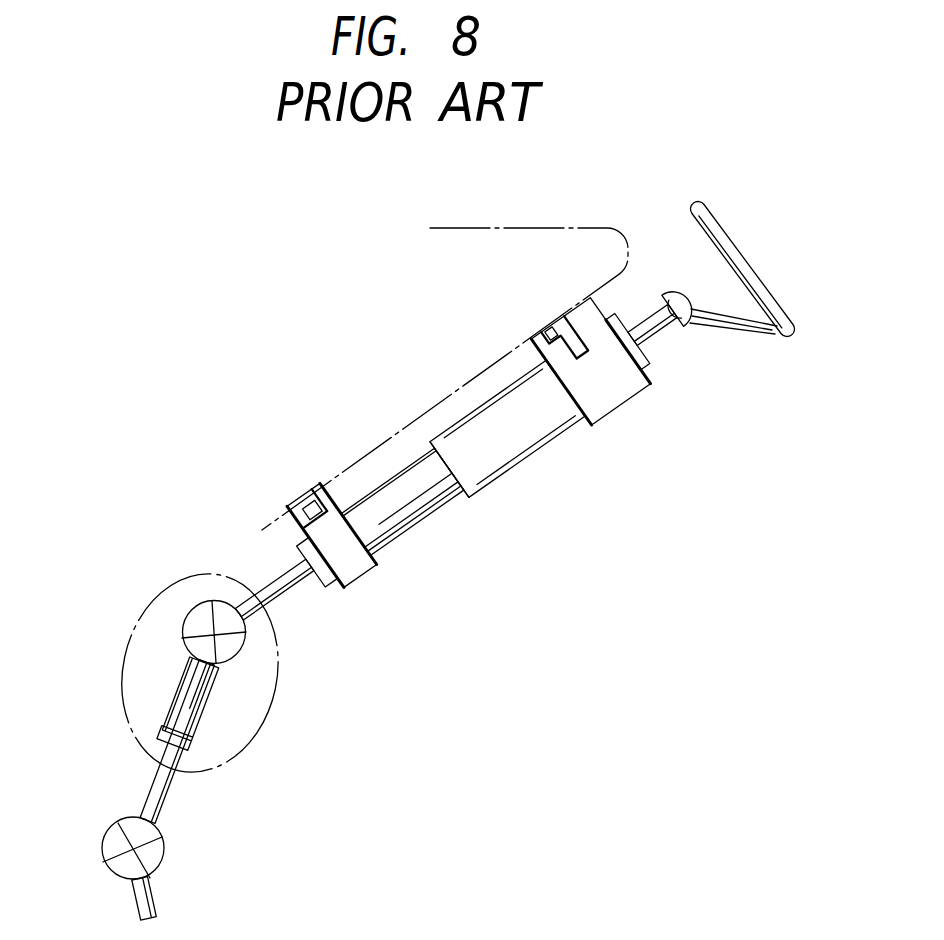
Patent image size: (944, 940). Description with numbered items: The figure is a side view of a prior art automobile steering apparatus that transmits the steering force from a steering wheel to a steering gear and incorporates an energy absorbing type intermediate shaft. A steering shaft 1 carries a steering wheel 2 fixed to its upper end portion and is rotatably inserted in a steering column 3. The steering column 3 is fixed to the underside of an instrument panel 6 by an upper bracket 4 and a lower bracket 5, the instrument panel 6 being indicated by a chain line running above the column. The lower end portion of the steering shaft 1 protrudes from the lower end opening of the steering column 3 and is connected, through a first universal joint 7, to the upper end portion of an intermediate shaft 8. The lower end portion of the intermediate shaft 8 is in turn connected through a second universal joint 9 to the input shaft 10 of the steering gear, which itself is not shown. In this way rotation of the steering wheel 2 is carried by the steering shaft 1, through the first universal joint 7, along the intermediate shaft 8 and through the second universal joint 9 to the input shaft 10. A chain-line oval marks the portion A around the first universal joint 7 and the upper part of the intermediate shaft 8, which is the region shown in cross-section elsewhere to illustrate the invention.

The steering shaft 1 is at (667, 334).
The steering wheel 2 is at (752, 264).
The steering column 3 is at (512, 461).
The upper bracket 4 is at (618, 391).
The lower bracket 5 is at (363, 564).
The instrument panel 6 is at (566, 244).
The first universal joint 7 is at (186, 618).
The intermediate shaft 8 is at (175, 688).
The second universal joint 9 is at (166, 847).
The input shaft 10 is at (140, 900).
The portion A is at (272, 691).